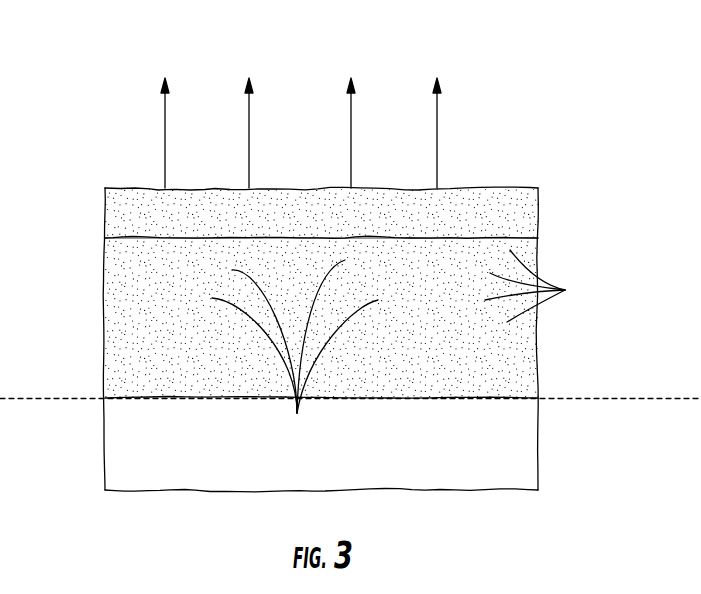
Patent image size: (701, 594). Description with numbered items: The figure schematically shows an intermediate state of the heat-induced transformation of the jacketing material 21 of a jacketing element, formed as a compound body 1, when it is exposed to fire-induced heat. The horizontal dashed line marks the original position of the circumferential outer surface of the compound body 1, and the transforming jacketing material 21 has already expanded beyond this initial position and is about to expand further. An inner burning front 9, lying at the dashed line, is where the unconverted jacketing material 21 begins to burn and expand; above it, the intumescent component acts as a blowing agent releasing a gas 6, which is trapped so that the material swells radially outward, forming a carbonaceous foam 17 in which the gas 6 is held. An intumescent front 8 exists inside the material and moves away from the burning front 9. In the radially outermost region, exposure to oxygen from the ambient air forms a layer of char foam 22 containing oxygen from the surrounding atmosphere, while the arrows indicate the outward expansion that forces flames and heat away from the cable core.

The compound body 1 is at (320, 360).
The jacketing material 21 is at (321, 398).
The char foam 22 is at (117, 212).
The carbonaceous foam 17 is at (128, 330).
The intumescent front 8 is at (537, 241).
The gas 6 is at (399, 347).
The burning front 9 is at (538, 400).